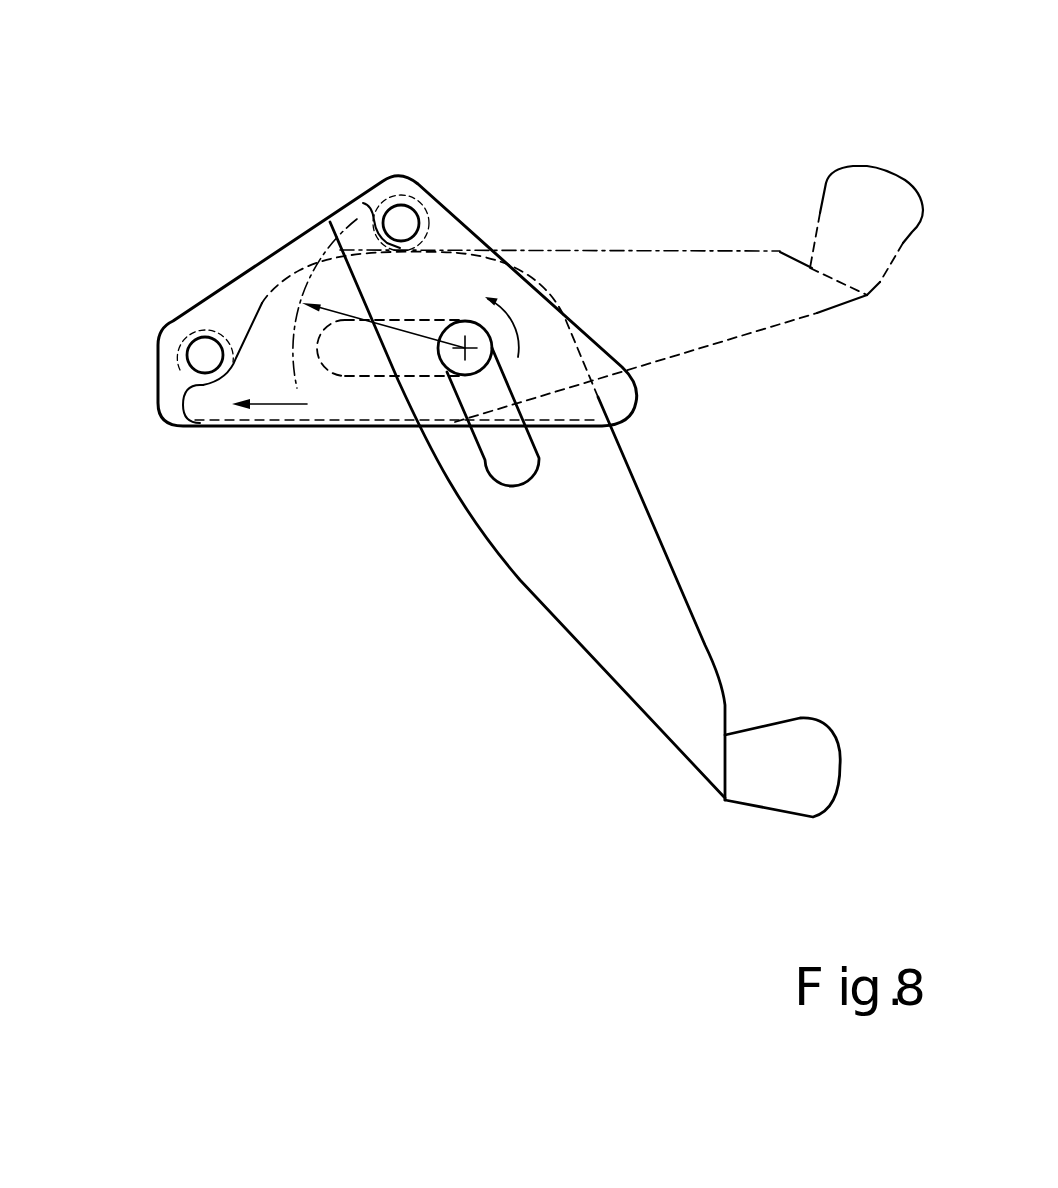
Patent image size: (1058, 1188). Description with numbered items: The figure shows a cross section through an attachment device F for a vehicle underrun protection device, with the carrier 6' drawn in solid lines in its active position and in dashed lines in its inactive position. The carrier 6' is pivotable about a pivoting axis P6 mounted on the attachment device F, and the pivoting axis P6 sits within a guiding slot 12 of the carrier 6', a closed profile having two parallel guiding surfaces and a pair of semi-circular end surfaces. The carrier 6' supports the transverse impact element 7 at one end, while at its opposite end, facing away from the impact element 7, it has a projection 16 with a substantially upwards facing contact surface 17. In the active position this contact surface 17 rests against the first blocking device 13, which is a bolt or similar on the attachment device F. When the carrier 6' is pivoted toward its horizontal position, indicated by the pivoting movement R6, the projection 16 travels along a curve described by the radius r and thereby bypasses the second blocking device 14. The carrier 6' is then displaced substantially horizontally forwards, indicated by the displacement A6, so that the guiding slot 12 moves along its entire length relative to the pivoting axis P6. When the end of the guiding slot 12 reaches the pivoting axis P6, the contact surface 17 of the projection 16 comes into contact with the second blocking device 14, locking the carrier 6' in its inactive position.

The attachment device F is at (453, 207).
The first blocking device 13 is at (395, 212).
The second blocking device 14 is at (202, 353).
The projection 16 is at (352, 237).
The contact surface 17 is at (200, 384).
The pivoting axis P6 is at (476, 367).
The radius r is at (379, 303).
The pivoting movement of the carrier R6 is at (517, 323).
The horizontal displacement of the carrier A6 is at (275, 417).
The guiding slot 12 is at (500, 481).
The carrier 6' is at (592, 483).
The impact element 7 is at (823, 768).